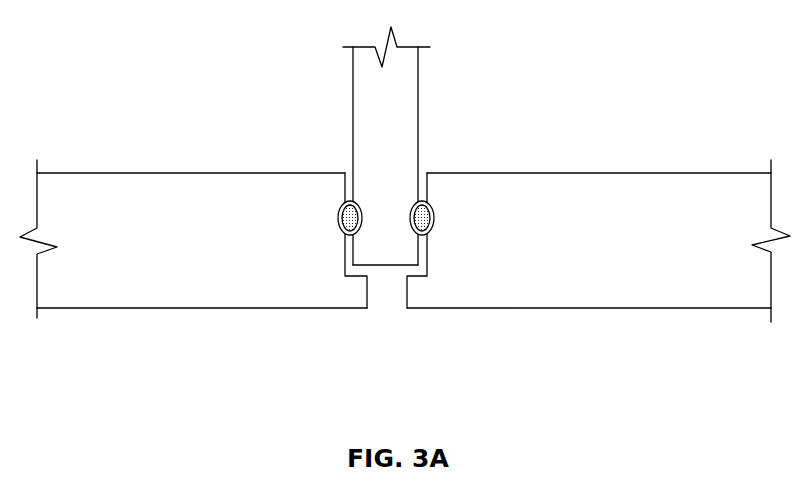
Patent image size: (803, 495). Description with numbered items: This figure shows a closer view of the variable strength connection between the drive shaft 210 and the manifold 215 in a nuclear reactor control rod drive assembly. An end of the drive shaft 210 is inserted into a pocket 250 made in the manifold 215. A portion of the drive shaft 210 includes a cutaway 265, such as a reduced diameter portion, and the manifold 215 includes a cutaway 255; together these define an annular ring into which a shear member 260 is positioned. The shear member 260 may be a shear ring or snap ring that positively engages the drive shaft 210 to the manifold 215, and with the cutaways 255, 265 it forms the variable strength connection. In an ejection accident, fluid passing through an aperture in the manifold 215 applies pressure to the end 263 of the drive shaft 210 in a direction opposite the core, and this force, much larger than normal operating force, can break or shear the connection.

The drive shaft 210 is at (419, 72).
The manifold 215 is at (678, 172).
The pocket 250 is at (428, 260).
The cutaway 255 is at (434, 217).
The shear member 260 is at (350, 201).
The end 263 is at (362, 268).
The cutaway 265 is at (412, 216).